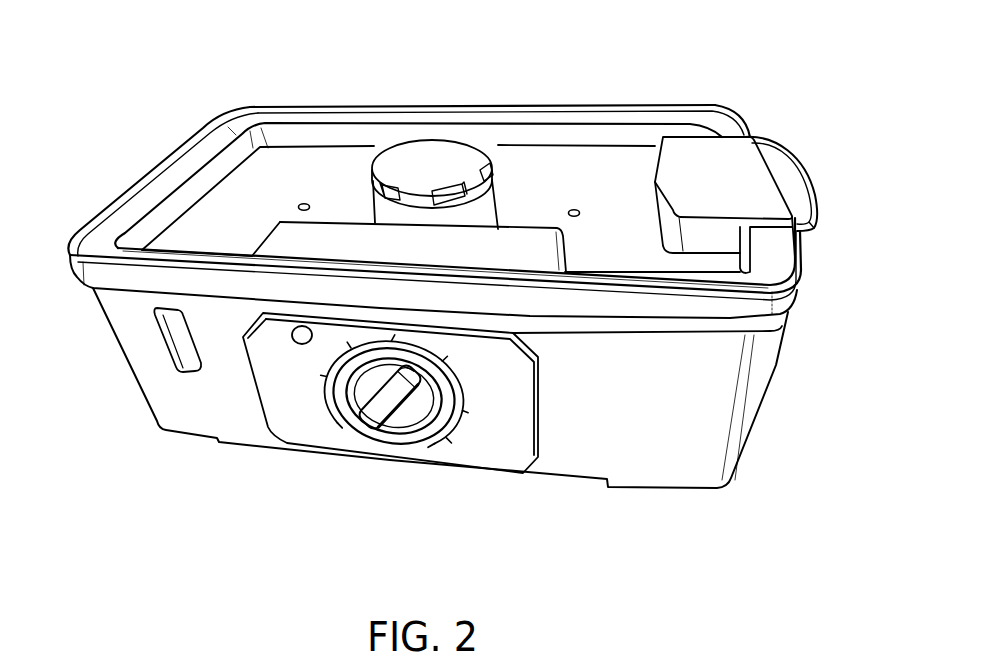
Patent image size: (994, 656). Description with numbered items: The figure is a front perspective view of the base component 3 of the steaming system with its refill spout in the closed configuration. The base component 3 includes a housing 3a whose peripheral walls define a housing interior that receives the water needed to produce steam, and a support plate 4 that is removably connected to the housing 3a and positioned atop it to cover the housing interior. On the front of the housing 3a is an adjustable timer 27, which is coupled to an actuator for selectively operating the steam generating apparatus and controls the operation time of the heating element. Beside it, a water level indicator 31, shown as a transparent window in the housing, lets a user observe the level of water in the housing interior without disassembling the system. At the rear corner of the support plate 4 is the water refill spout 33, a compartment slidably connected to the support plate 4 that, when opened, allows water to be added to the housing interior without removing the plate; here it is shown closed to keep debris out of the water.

The base component 3 is at (160, 473).
The housing 3a is at (686, 436).
The support plate 4 is at (506, 96).
The adjustable timer 27 is at (342, 477).
The water level indicator 31 is at (156, 341).
The water refill spout 33 is at (820, 207).